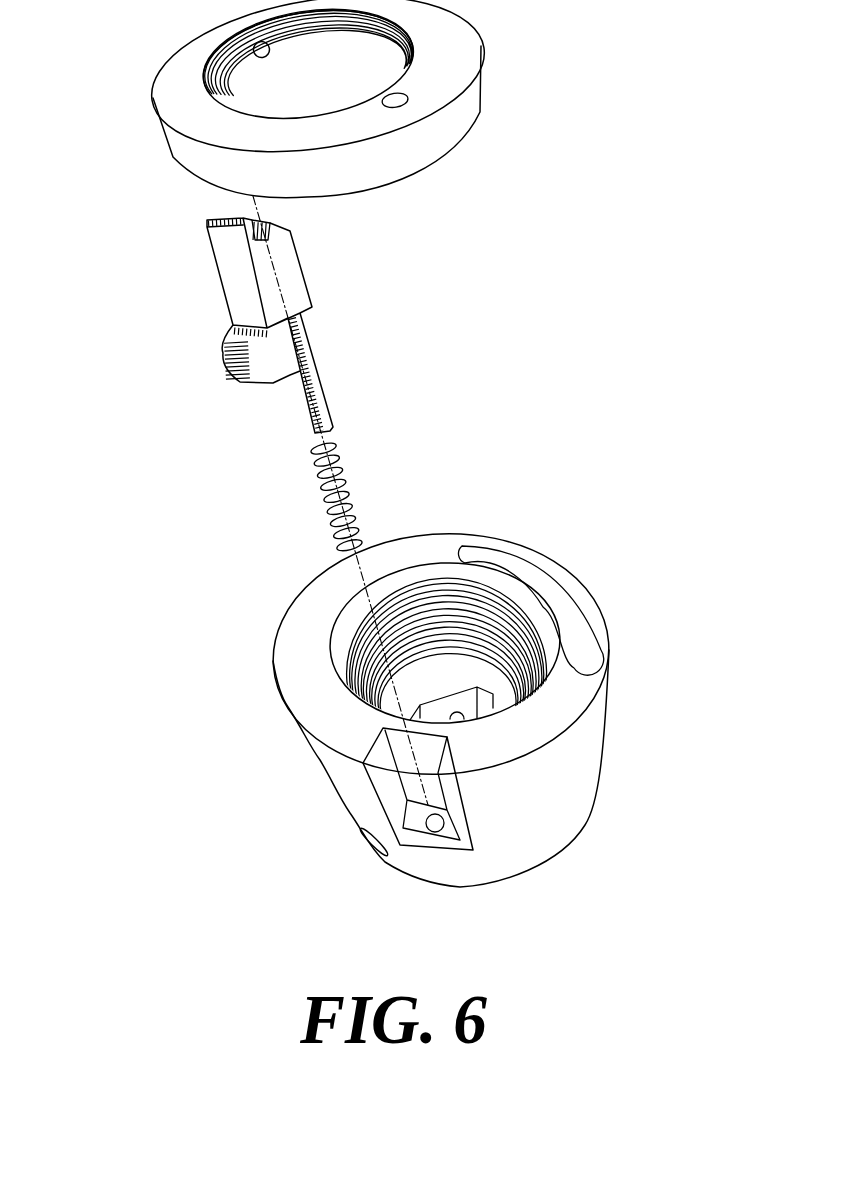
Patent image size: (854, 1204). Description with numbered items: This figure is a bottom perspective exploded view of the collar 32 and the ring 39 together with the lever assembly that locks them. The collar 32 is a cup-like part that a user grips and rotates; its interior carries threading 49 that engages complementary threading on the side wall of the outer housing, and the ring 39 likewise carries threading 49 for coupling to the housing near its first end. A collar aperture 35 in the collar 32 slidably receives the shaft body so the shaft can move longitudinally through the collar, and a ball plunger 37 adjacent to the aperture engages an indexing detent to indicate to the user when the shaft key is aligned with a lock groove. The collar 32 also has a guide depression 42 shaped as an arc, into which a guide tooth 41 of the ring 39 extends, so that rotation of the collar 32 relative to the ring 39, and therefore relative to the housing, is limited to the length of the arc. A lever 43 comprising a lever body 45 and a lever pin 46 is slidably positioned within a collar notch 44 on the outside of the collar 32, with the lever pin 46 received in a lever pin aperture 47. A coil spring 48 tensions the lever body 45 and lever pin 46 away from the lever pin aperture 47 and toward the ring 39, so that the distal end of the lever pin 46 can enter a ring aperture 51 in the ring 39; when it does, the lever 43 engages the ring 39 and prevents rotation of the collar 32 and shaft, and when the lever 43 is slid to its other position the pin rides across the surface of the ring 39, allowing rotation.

The collar 32 is at (460, 705).
The collar aperture 35 is at (468, 702).
The ball plunger 37 is at (463, 727).
The ring 39 is at (286, 99).
The guide tooth 41 is at (383, 63).
The guide depression 42 is at (565, 590).
The lever 43 is at (262, 316).
The collar notch 44 is at (432, 777).
The lever body 45 is at (288, 286).
The lever pin 46 is at (263, 226).
The lever pin aperture 47 is at (443, 830).
The spring 48 is at (305, 505).
The threading 49 is at (237, 78).
The ring aperture 51 is at (400, 98).